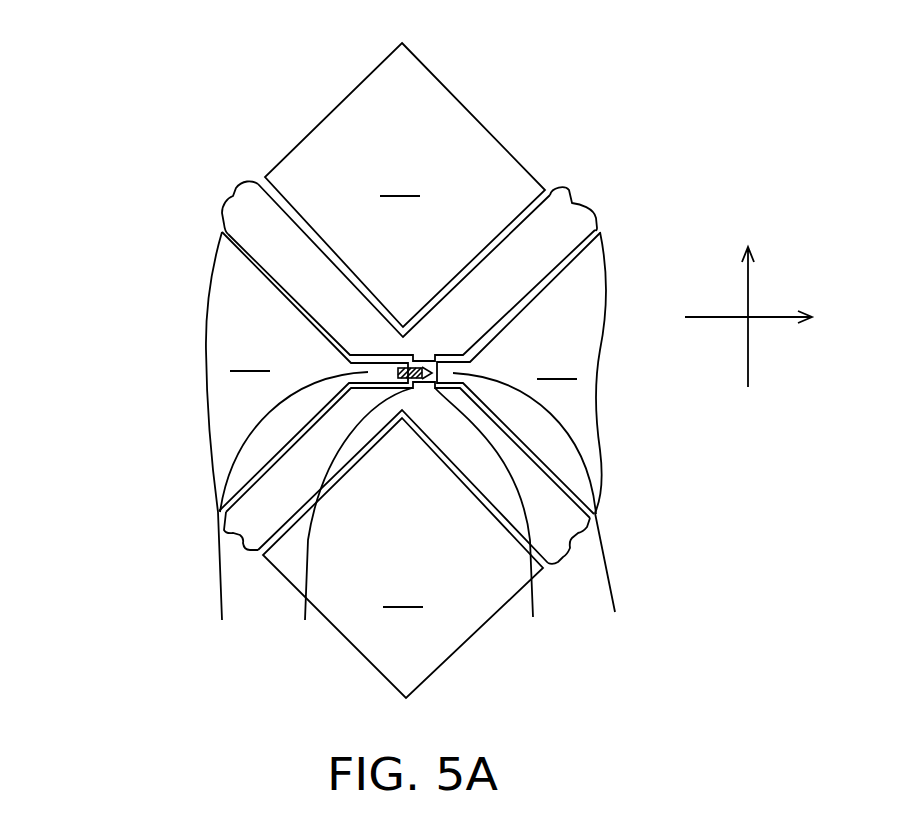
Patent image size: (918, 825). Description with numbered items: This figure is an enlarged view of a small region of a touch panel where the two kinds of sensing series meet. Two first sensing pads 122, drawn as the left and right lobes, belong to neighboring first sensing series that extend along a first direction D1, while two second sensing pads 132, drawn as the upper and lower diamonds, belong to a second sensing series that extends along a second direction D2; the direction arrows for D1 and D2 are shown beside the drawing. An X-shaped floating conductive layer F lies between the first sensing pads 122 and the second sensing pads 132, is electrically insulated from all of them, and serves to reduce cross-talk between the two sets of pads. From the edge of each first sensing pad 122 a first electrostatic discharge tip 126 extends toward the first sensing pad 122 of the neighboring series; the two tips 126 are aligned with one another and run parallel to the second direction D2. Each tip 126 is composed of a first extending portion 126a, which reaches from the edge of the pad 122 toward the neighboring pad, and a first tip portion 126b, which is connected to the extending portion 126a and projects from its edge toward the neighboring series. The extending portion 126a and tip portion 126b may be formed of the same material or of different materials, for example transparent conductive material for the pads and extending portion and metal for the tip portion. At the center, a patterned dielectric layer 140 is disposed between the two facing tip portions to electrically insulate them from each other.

The first sensing pad 122 is at (409, 373).
The first electrostatic discharge tip 126 is at (323, 662).
The first extending portion 126a is at (424, 447).
The first tip portion 126b is at (423, 525).
The second sensing pad 132 is at (404, 370).
The patterned dielectric layer 140 is at (427, 360).
The floating conductive layer F is at (562, 222).
The first direction D1 is at (750, 296).
The second direction D2 is at (766, 318).